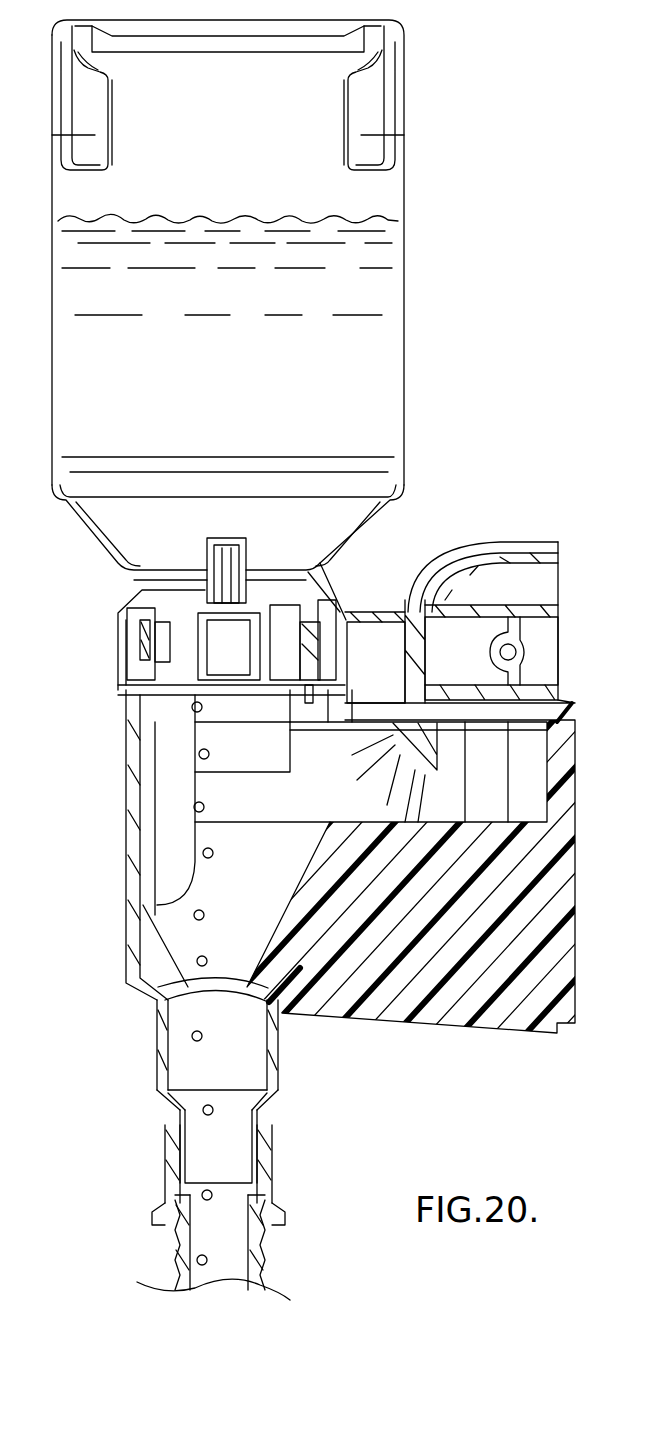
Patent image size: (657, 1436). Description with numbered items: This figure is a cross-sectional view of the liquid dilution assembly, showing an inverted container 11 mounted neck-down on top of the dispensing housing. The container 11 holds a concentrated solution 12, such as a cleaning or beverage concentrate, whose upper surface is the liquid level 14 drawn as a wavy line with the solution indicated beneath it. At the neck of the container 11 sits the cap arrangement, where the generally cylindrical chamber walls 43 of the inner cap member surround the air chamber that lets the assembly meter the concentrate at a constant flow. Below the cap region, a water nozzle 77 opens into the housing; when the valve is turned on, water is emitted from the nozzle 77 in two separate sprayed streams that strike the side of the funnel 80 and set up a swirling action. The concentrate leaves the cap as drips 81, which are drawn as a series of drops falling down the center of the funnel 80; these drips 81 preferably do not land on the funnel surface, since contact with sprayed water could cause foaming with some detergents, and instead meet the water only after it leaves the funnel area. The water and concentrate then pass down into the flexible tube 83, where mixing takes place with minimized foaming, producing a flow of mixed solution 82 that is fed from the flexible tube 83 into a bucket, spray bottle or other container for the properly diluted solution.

The container 11 is at (402, 348).
The concentrated solution 12 is at (227, 305).
The liquid level 14 is at (198, 220).
The chamber walls 43 is at (228, 540).
The nozzle 77 is at (437, 742).
The funnel 80 is at (340, 935).
The drips 81 is at (208, 752).
The mixed solution 82 is at (188, 1240).
The flexible tube 83 is at (178, 1268).